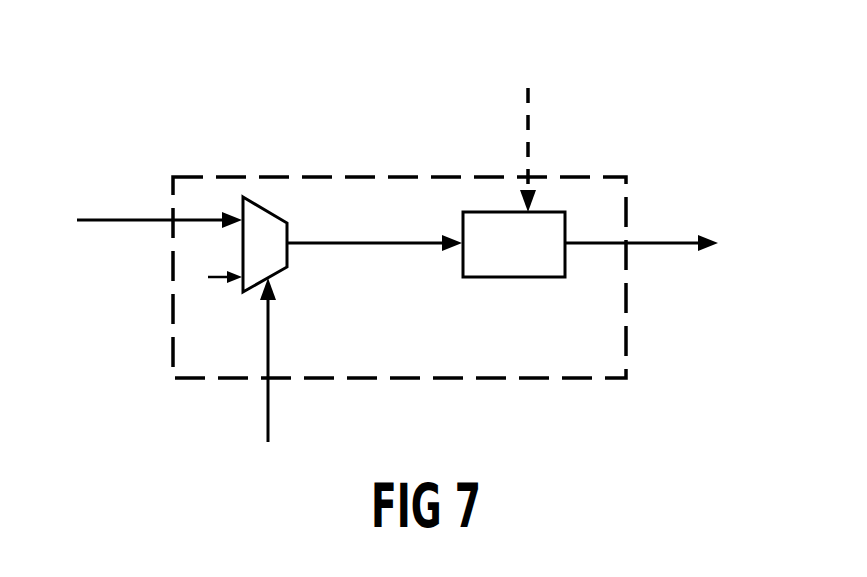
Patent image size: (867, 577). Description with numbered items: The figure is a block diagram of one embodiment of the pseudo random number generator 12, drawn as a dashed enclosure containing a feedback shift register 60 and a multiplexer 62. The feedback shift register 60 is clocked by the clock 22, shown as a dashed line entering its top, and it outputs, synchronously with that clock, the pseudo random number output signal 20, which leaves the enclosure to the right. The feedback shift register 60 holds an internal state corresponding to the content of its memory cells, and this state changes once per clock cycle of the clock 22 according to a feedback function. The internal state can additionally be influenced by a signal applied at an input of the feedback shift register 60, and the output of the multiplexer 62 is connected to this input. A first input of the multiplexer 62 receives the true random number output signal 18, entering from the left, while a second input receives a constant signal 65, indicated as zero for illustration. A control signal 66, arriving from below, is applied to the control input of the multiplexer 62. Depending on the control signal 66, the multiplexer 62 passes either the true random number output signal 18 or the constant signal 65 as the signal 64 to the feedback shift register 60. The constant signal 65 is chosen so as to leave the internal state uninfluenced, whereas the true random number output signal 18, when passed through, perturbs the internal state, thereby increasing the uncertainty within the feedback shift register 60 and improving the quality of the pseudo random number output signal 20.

The pseudo random number generator 12 is at (597, 177).
The true random number output signal 18 is at (115, 220).
The constant signal 65 is at (215, 272).
The multiplexer 62 is at (240, 292).
The control signal 66 is at (265, 428).
The signal 64 is at (357, 245).
The feedback shift register 60 is at (485, 212).
The clock 22 is at (528, 88).
The pseudo random number output signal 20 is at (667, 247).